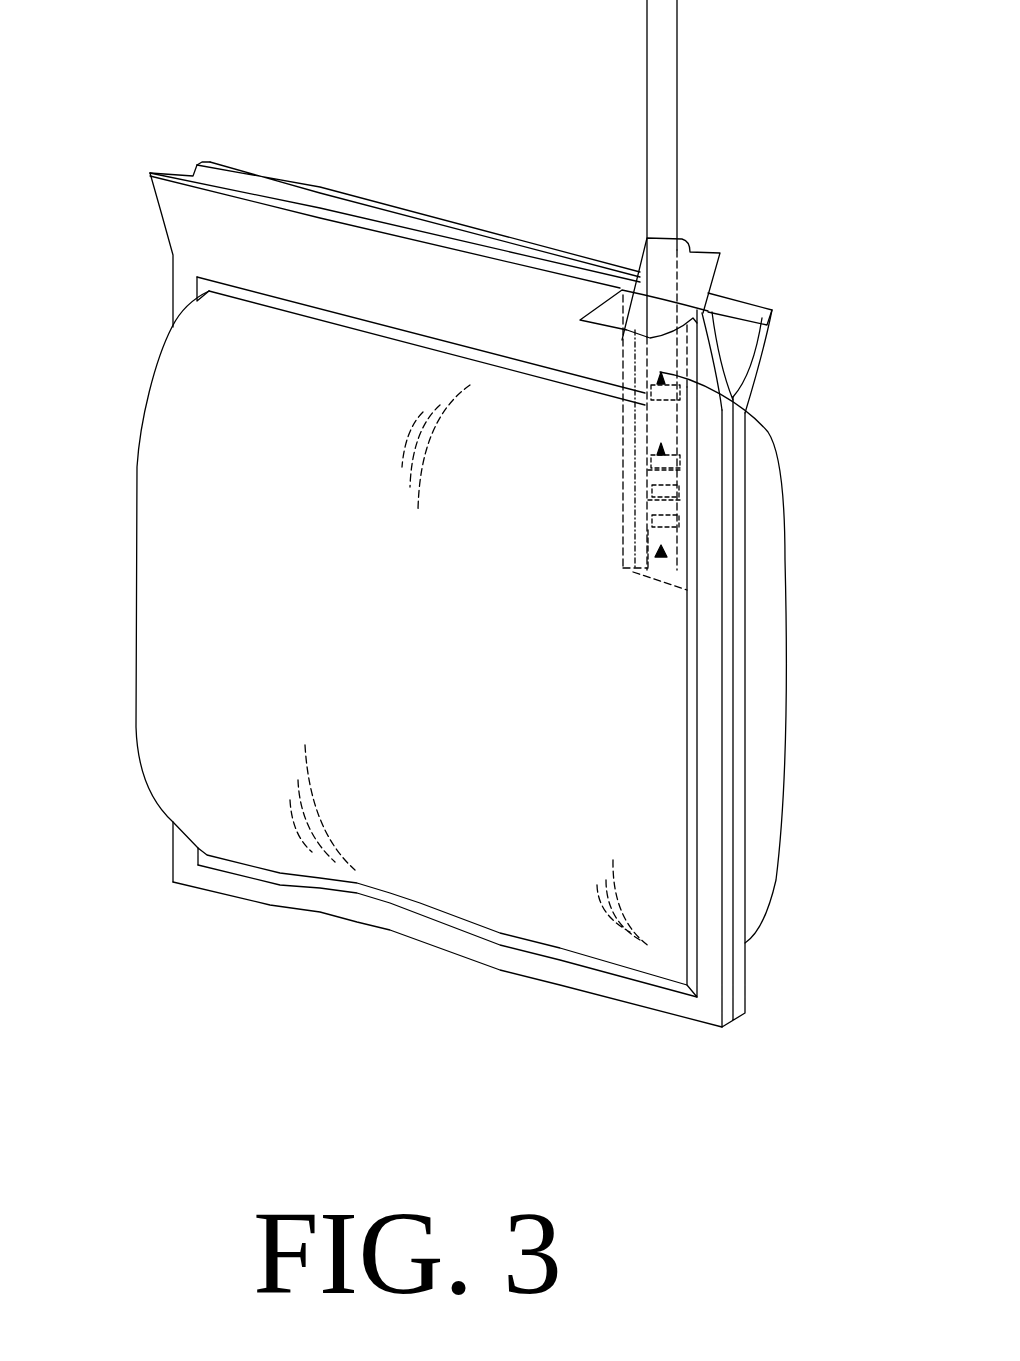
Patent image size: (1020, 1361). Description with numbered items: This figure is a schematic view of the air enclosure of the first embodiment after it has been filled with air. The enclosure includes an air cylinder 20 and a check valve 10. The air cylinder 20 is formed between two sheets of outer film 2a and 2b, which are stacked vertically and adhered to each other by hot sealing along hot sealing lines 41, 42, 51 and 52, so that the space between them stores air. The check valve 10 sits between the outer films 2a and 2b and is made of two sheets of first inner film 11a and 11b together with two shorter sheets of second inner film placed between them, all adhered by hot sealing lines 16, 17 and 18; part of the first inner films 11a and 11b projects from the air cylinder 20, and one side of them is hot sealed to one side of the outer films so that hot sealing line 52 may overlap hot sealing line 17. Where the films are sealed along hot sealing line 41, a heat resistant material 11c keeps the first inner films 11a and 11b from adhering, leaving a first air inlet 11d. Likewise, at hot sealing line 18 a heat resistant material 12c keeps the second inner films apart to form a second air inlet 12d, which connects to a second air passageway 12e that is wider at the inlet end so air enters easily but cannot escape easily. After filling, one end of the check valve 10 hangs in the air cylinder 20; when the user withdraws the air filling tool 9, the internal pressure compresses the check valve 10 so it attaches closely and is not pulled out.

The air filling tool 9 is at (665, 38).
The check valve 10 is at (657, 266).
The first inner film 11a is at (707, 252).
The first inner film 11b is at (600, 308).
The heat resistant material 11c is at (663, 420).
The first air inlet 11d is at (678, 358).
The heat resistant material 12c is at (680, 520).
The second air inlet 12d is at (667, 452).
The second air passageway 12e is at (658, 550).
The hot sealing line 16 is at (632, 546).
The hot sealing line 17 is at (693, 564).
The hot sealing line 18 is at (645, 492).
The air cylinder 20 is at (145, 538).
The outer film 2a is at (758, 338).
The outer film 2b is at (178, 212).
The hot sealing line 41 is at (323, 312).
The hot sealing line 42 is at (512, 955).
The hot sealing line 51 is at (197, 290).
The hot sealing line 52 is at (695, 730).